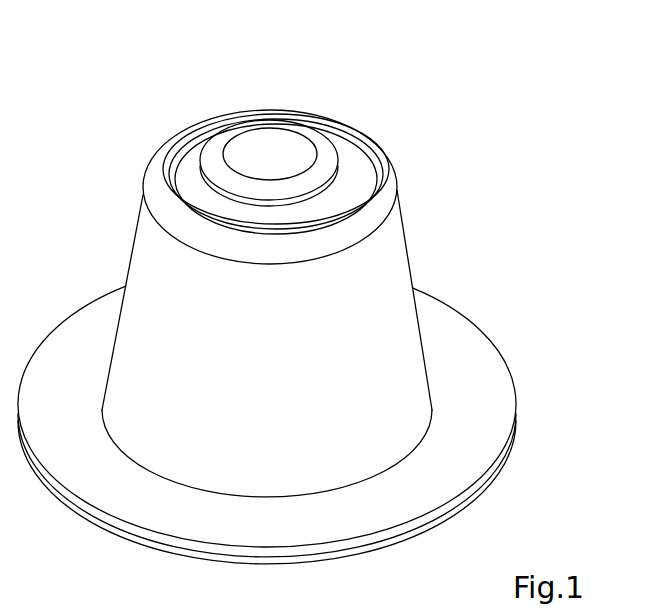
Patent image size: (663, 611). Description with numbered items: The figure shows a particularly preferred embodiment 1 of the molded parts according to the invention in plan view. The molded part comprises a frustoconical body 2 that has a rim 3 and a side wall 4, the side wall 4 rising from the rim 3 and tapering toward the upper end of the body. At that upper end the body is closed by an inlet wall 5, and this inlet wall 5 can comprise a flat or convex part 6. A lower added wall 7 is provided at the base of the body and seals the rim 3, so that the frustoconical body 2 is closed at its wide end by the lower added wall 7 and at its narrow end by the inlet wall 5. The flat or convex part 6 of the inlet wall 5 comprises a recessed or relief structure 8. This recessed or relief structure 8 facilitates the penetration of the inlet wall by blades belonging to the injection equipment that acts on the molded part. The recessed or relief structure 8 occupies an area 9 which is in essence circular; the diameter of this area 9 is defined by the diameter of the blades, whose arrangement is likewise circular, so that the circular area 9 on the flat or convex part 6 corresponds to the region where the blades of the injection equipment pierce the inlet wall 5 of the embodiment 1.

The embodiment of the molded part 1 is at (471, 158).
The frustoconical body 2 is at (406, 238).
The rim 3 is at (493, 368).
The side wall 4 is at (413, 268).
The inlet wall 5 is at (202, 105).
The flat or convex part 6 is at (317, 150).
The lower added wall 7 is at (126, 537).
The recessed or relief structure 8 is at (193, 190).
The area 9 is at (185, 162).